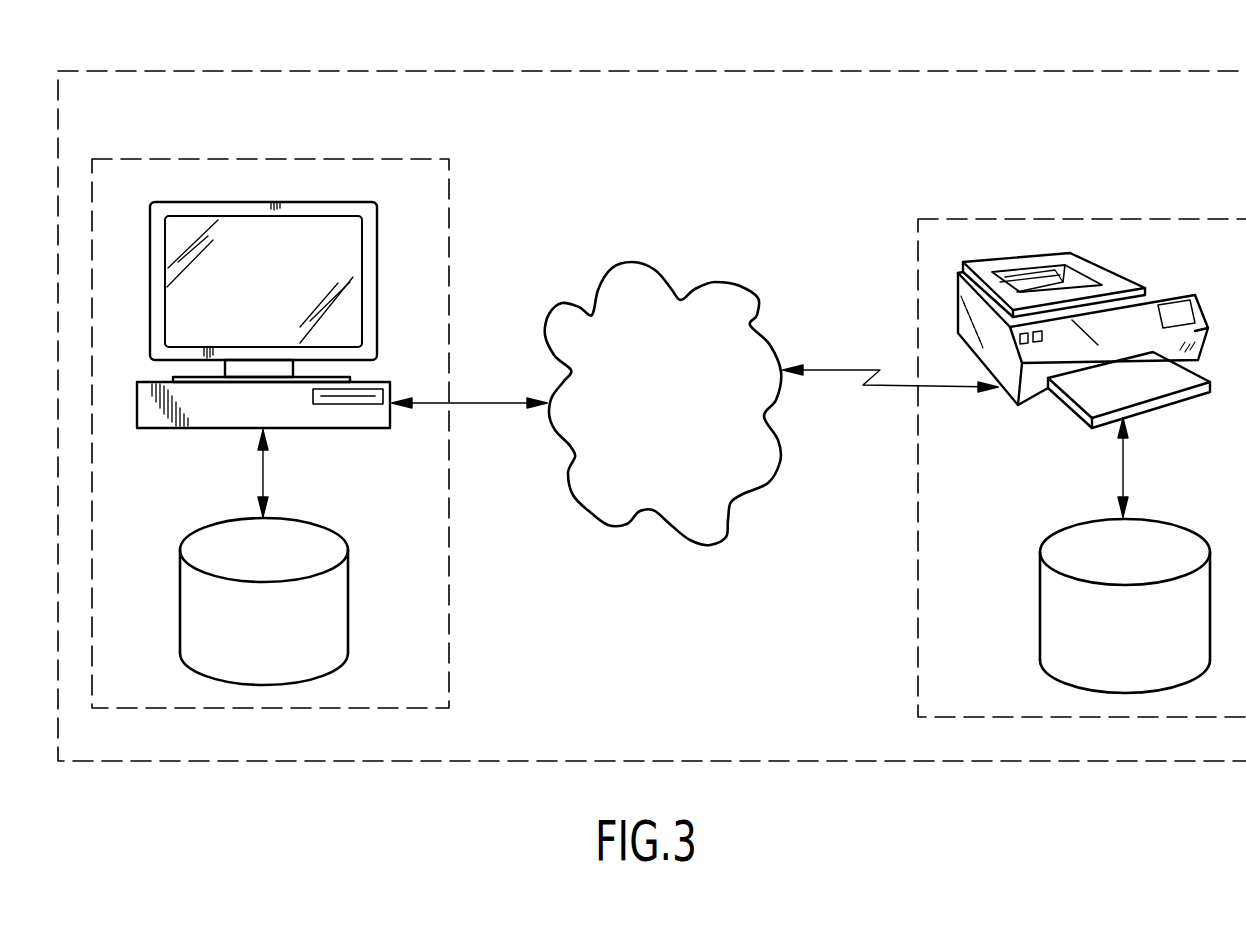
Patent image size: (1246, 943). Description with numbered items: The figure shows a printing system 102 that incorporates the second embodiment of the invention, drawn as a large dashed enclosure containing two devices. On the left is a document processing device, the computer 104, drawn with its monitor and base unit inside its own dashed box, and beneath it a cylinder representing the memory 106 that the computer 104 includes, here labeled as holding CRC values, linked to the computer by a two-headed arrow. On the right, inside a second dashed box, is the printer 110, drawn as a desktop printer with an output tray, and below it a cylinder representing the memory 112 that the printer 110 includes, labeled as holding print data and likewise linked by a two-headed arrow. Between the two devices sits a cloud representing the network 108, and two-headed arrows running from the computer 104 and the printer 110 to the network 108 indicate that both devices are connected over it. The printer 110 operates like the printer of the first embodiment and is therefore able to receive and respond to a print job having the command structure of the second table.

The printing system 102 is at (502, 71).
The computer 104 is at (237, 159).
The memory 106 is at (348, 597).
The network 108 is at (643, 260).
The printer 110 is at (952, 215).
The memory 112 is at (1037, 628).